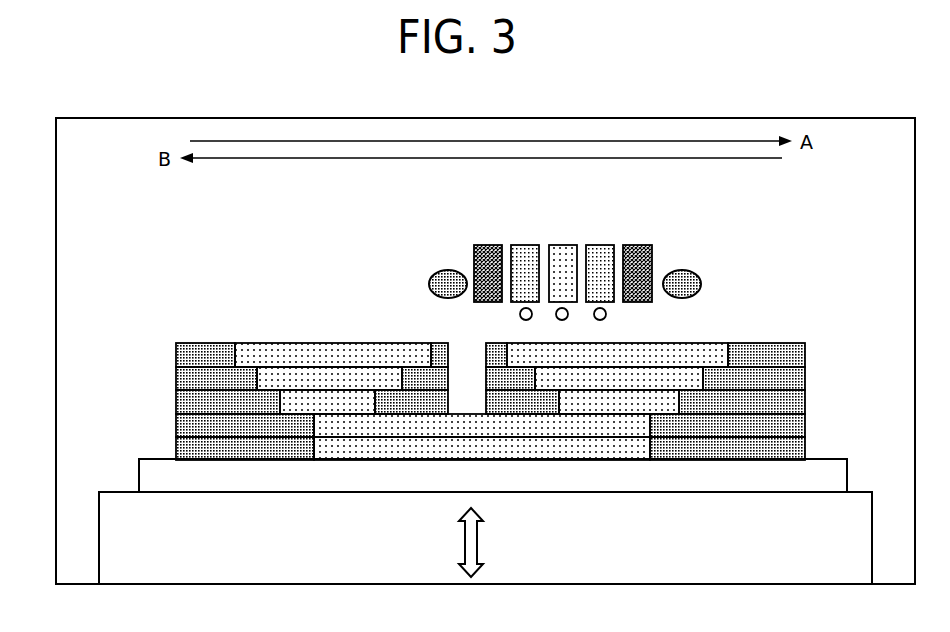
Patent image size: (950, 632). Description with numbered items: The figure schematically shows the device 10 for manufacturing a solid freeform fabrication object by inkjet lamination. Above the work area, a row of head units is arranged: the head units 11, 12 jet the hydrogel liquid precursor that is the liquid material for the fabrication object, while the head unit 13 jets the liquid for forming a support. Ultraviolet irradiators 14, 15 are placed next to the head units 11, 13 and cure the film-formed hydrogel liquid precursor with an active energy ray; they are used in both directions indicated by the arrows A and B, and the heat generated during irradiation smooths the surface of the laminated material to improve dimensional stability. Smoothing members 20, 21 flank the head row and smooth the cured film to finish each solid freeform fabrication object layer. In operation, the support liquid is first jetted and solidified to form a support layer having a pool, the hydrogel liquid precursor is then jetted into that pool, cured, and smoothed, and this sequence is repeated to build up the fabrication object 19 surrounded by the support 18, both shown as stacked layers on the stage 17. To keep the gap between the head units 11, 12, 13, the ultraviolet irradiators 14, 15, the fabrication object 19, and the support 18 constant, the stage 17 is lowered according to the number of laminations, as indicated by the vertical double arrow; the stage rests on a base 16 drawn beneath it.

The device for manufacturing a solid freeform fabrication object 10 is at (50, 318).
The head unit 11 is at (524, 245).
The head unit 12 is at (562, 245).
The head unit 13 is at (600, 245).
The ultraviolet irradiator 14 is at (488, 245).
The ultraviolet irradiator 15 is at (637, 245).
The stage 16 is at (155, 459).
The stage 17 is at (110, 492).
The support 18 is at (460, 371).
The fabrication object 19 is at (322, 331).
The smoothing member 20 is at (443, 270).
The smoothing member 21 is at (680, 271).